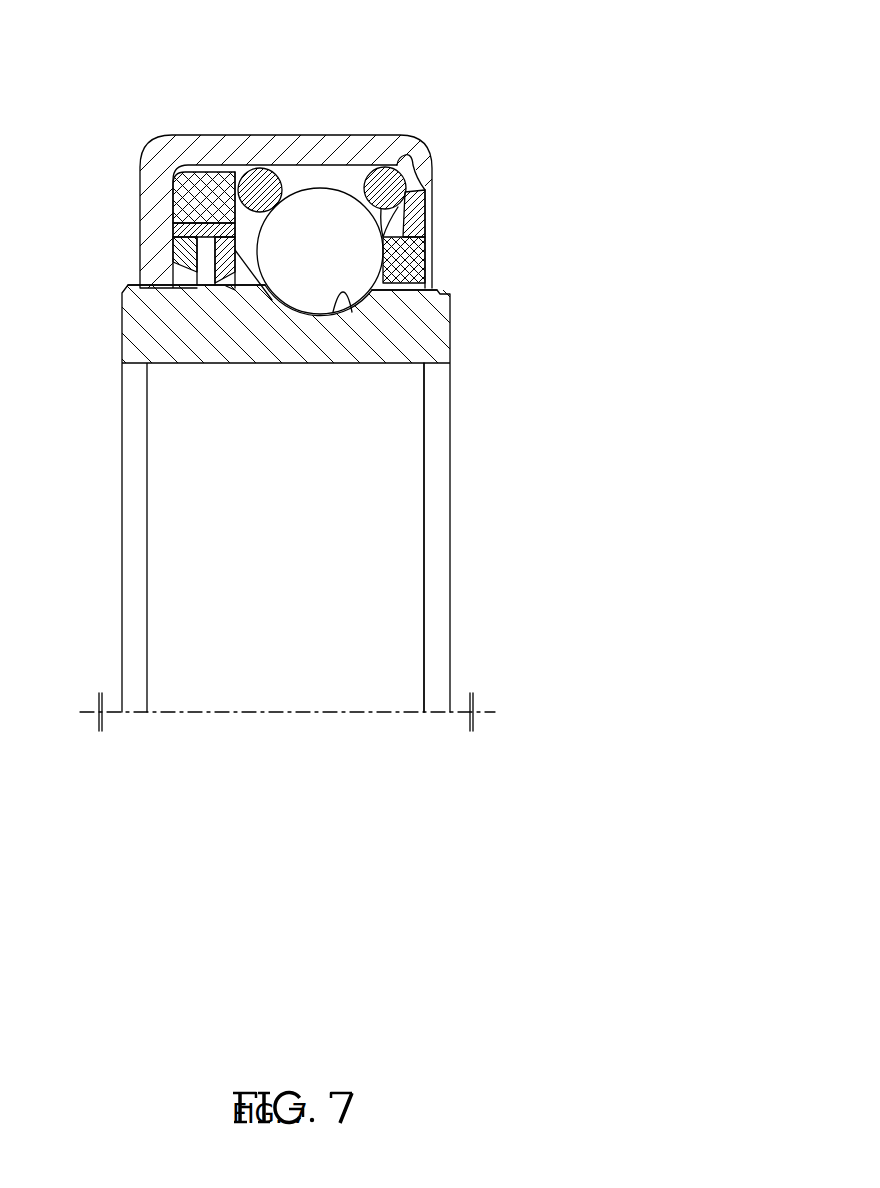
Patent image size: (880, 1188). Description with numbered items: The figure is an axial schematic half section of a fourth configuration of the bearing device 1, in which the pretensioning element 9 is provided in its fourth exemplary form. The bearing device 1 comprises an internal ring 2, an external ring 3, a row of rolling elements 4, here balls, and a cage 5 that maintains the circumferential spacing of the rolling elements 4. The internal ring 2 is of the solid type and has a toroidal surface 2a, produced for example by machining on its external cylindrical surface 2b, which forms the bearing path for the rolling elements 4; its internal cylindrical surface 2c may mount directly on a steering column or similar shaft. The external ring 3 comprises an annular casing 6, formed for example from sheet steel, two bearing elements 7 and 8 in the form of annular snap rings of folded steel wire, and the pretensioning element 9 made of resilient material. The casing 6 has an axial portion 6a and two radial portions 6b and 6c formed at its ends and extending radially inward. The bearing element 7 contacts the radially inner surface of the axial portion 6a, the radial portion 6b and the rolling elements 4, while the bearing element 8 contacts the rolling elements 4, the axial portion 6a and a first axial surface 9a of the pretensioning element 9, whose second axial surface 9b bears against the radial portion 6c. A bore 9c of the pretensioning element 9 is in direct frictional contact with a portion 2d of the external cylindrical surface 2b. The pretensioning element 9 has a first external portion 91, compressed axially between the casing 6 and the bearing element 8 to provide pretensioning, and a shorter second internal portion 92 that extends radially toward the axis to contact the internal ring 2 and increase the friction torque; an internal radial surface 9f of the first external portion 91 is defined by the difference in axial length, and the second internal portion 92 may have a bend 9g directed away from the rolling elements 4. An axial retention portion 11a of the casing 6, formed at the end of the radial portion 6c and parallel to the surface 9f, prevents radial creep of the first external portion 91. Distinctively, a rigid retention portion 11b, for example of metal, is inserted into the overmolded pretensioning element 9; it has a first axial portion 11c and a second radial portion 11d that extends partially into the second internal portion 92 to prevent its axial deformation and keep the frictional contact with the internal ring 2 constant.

The bearing device 1 is at (288, 356).
The internal ring 2 is at (275, 490).
The toroidal surface 2a is at (367, 363).
The external cylindrical surface 2b is at (434, 268).
The internal cylindrical surface 2c is at (403, 363).
The portion of the external cylindrical surface 2d is at (247, 287).
The external ring 3 is at (152, 140).
The rolling elements 4 is at (326, 296).
The cage 5 is at (430, 240).
The annular casing 6 is at (289, 159).
The axial portion 6a is at (333, 135).
The radial portion 6b is at (424, 180).
The radial portion 6c is at (176, 222).
The bearing element 7 is at (412, 153).
The bearing element 8 is at (259, 168).
The pretensioning element 9 is at (204, 250).
The first axial surface 9a is at (238, 172).
The second axial surface 9b is at (173, 178).
The bore 9c is at (205, 286).
The internal radial surface 9f is at (178, 270).
The bend 9g is at (283, 355).
The first external portion 91 is at (185, 170).
The second internal portion 92 is at (185, 283).
The axial retention portion 11a is at (187, 285).
The retention portion 11b is at (259, 216).
The first axial portion 11c is at (194, 168).
The second radial portion 11d is at (231, 222).